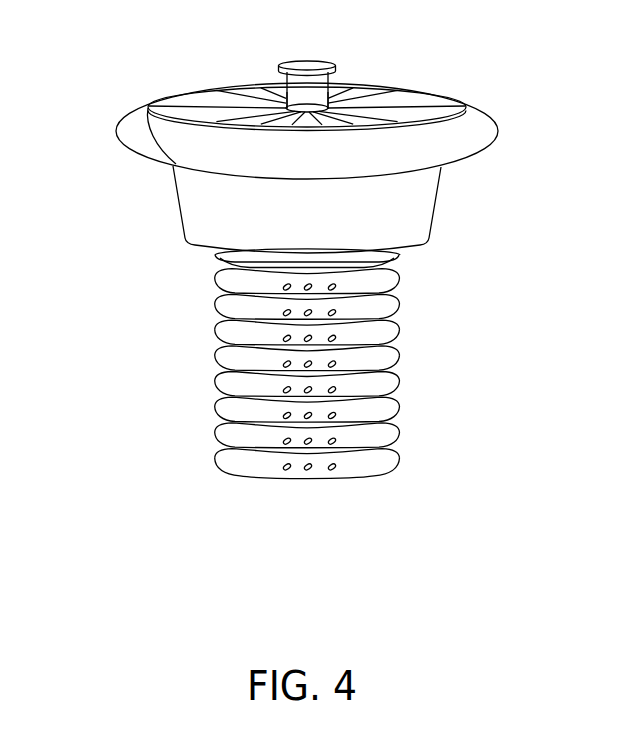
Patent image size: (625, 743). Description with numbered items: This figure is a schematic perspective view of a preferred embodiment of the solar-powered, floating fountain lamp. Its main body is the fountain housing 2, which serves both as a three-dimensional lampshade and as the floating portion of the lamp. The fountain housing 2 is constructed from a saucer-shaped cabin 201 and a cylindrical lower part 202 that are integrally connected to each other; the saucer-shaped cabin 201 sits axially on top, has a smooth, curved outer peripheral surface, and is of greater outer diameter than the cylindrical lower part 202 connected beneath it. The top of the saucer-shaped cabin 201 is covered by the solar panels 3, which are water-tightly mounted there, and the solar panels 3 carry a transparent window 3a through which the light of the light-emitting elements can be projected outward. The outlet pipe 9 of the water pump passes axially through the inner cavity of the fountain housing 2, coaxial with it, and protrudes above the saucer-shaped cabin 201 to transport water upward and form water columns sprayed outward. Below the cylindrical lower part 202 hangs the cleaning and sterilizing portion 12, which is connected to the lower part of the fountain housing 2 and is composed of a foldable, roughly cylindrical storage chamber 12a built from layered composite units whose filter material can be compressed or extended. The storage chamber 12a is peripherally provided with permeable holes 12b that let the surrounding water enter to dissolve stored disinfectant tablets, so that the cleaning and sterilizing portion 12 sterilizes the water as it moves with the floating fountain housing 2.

The fountain housing 2 is at (284, 243).
The solar panels 3 is at (307, 69).
The transparent window 3a is at (362, 100).
The outlet pipe 9 is at (287, 87).
The cleaning and sterilizing portion 12 is at (296, 364).
The storage chamber 12a is at (382, 334).
The permeable holes 12b is at (370, 413).
The saucer-shaped cabin 201 is at (476, 127).
The cylindrical lower part 202 is at (410, 208).